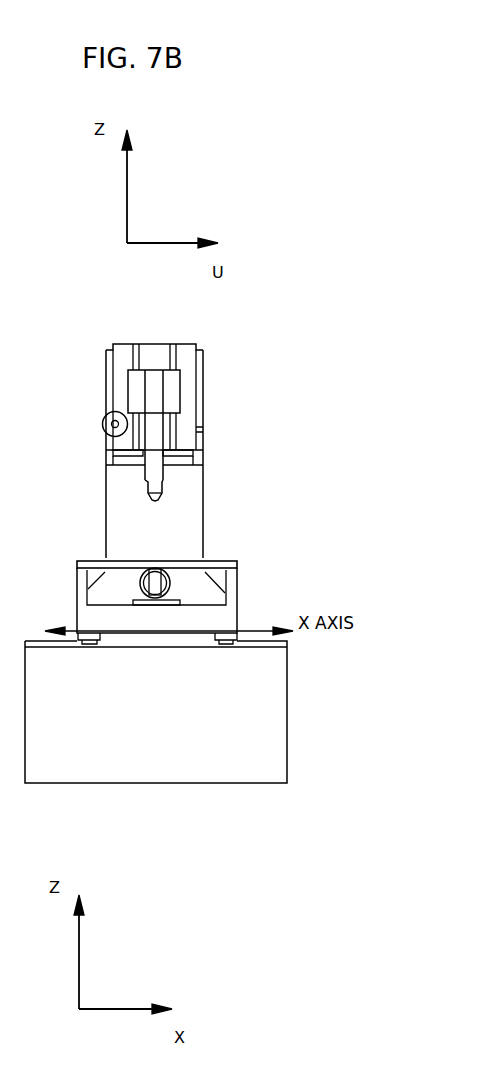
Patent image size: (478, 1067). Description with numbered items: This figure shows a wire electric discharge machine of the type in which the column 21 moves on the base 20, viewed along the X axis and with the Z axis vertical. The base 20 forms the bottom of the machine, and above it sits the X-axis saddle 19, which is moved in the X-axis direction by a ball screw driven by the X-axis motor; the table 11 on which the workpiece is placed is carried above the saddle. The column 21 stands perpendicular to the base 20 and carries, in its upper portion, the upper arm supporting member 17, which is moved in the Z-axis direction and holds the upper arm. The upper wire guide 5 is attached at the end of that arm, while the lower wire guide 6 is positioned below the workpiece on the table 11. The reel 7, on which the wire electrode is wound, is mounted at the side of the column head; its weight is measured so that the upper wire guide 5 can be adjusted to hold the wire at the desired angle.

The upper wire guide 5 is at (152, 497).
The lower wire guide 6 is at (140, 571).
The reel 7 is at (102, 422).
The table 11 is at (231, 562).
The upper arm supporting member 17 is at (151, 397).
The X-axis saddle 19 is at (208, 618).
The base 20 is at (167, 763).
The column 21 is at (185, 520).